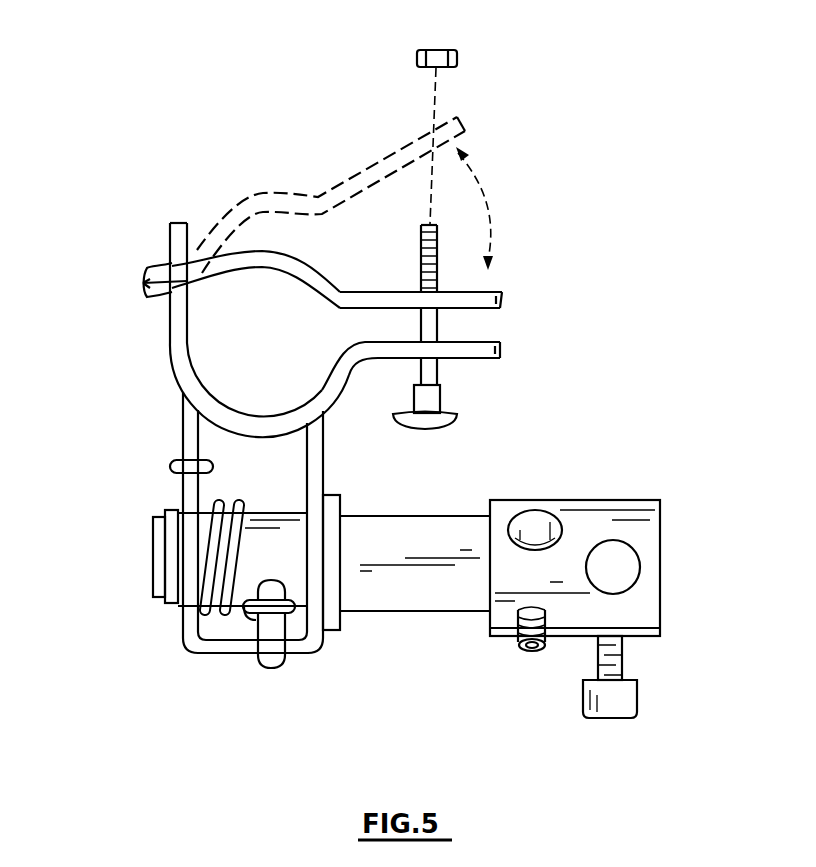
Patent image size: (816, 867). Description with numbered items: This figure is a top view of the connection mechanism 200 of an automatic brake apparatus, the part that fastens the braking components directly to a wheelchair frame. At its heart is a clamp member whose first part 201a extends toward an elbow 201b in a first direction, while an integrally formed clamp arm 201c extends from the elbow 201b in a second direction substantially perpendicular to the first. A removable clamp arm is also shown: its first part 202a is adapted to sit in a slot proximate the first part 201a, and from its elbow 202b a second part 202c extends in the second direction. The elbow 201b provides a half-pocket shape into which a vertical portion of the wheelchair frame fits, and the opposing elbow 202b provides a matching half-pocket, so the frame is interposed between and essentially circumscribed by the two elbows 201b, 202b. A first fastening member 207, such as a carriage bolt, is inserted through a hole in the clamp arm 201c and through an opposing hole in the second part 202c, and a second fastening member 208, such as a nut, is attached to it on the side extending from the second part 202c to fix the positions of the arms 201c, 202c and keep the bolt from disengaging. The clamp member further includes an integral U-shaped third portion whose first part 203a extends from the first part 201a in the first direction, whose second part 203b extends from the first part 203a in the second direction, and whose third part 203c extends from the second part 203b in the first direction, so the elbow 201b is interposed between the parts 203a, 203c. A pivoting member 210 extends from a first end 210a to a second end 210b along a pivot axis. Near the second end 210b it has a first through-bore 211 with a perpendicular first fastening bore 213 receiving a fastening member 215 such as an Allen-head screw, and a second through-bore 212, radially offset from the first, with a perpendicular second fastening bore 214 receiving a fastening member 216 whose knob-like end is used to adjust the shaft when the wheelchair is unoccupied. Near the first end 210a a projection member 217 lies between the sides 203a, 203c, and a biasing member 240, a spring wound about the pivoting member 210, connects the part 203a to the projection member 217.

The connection mechanism 200 is at (101, 468).
The first part of clamp member 201a is at (175, 310).
The elbow of clamp member 201b is at (225, 418).
The clamp arm 201c is at (503, 349).
The first part of removable clamp arm 202a is at (155, 246).
The elbow of removable clamp arm 202b is at (315, 275).
The second part of removable clamp arm 202c is at (503, 294).
The first part of third portion 203a is at (183, 630).
The second part of third portion 203b is at (237, 655).
The third part of third portion 203c is at (325, 478).
The first fastening member 207 is at (447, 433).
The second fastening member 208 is at (437, 56).
The pivoting member 210 is at (380, 550).
The first end of pivoting member 210a is at (170, 557).
The second end of pivoting member 210b is at (660, 575).
The first through-bore 211 is at (545, 525).
The second through-bore 212 is at (627, 563).
The first fastening bore 213 is at (505, 637).
The second fastening bore 214 is at (660, 627).
The fastening member 215 is at (532, 652).
The fastening member 216 is at (617, 705).
The projection member 217 is at (272, 664).
The biasing member 240 is at (215, 507).